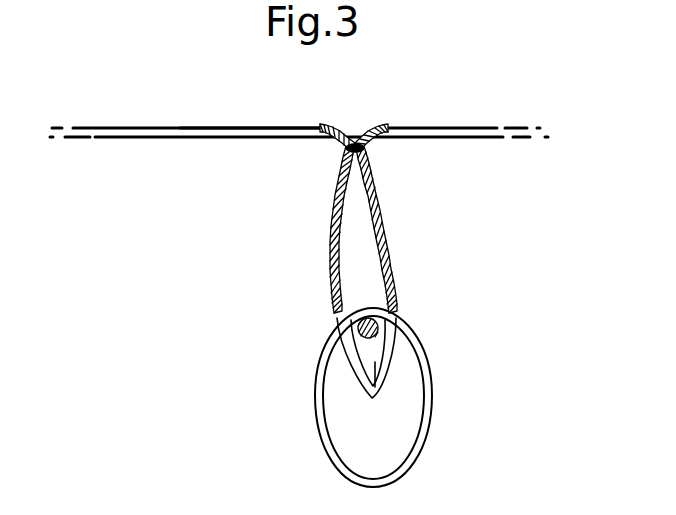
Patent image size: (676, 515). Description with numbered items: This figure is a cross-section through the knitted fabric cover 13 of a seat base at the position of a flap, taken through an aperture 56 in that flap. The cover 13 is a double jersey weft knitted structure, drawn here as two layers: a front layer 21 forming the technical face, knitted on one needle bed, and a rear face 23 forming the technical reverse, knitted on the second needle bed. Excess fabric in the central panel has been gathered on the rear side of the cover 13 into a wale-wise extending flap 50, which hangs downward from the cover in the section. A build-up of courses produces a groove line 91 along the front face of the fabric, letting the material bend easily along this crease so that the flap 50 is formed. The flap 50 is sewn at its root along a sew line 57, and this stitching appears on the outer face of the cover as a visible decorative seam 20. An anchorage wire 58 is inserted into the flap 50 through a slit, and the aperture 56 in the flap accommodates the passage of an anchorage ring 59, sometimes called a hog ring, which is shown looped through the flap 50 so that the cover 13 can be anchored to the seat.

The fabric cover 13 is at (170, 127).
The front layer 21 is at (273, 127).
The rear face 23 is at (288, 140).
The decorative seam 20 is at (352, 130).
The sew line 57 is at (366, 152).
The wale-wise extending flap 50 is at (332, 275).
The anchorage wire 58 is at (402, 308).
The aperture 56 is at (393, 345).
The groove line 91 is at (370, 370).
The anchorage ring 59 is at (417, 447).